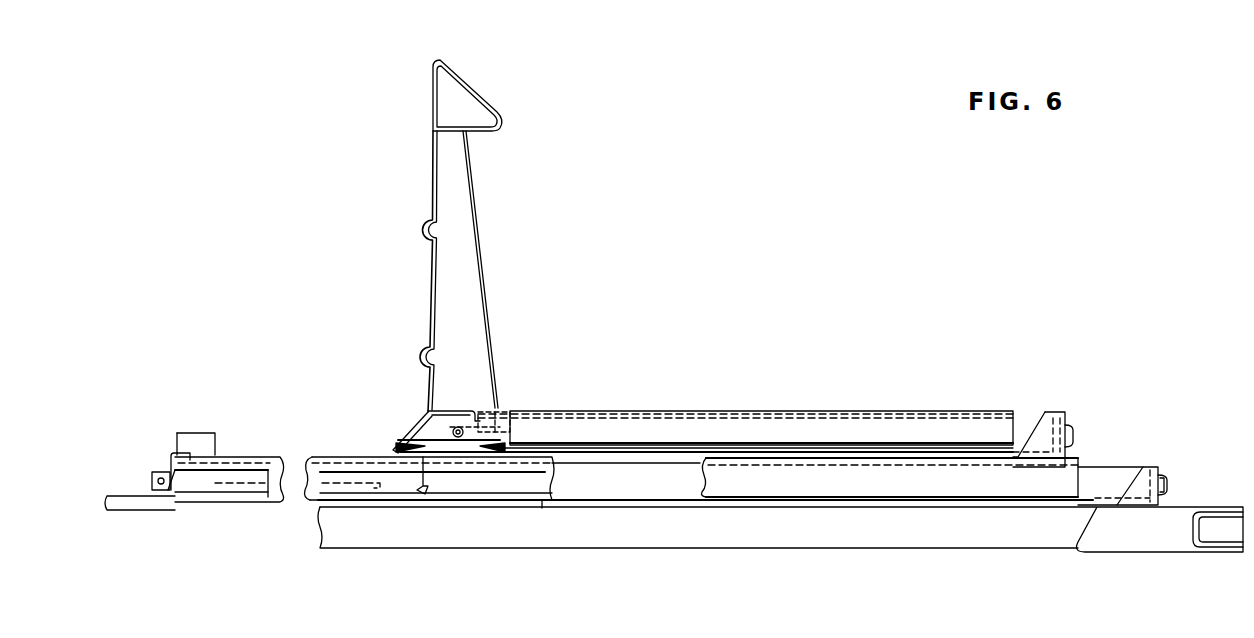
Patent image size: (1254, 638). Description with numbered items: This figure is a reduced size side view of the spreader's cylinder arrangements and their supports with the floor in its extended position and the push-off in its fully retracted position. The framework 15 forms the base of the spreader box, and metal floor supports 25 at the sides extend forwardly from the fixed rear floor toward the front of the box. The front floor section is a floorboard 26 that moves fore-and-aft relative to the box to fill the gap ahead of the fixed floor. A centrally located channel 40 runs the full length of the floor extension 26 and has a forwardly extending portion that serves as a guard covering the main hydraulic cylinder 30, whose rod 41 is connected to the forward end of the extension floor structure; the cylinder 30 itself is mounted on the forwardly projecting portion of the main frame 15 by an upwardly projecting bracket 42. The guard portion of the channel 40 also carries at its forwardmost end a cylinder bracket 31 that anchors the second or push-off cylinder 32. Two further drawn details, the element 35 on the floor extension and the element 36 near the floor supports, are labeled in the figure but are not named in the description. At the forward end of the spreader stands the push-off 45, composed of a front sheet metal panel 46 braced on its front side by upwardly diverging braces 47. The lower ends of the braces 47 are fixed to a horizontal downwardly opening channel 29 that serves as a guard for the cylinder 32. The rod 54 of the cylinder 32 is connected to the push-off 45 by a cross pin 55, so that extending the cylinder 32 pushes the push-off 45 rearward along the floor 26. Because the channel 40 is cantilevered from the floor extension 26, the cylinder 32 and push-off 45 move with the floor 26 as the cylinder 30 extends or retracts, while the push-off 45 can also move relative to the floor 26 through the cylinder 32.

The framework 15 is at (714, 548).
The floor supports 25 is at (242, 505).
The floorboard 26 is at (347, 455).
The channel 29 is at (857, 432).
The main hydraulic cylinder 30 is at (1117, 463).
The cylinder bracket 31 is at (1065, 418).
The push-off cylinder 32 is at (1040, 421).
The latch hook 35 is at (430, 475).
The clip 36 is at (172, 493).
The channel 40 is at (1060, 483).
The rod 41 is at (152, 490).
The bracket 42 is at (1164, 470).
The push-off 45 is at (492, 100).
The front sheet metal panel 46 is at (429, 268).
The braces 47 is at (463, 233).
The rod 54 is at (500, 432).
The cross pin 55 is at (457, 426).